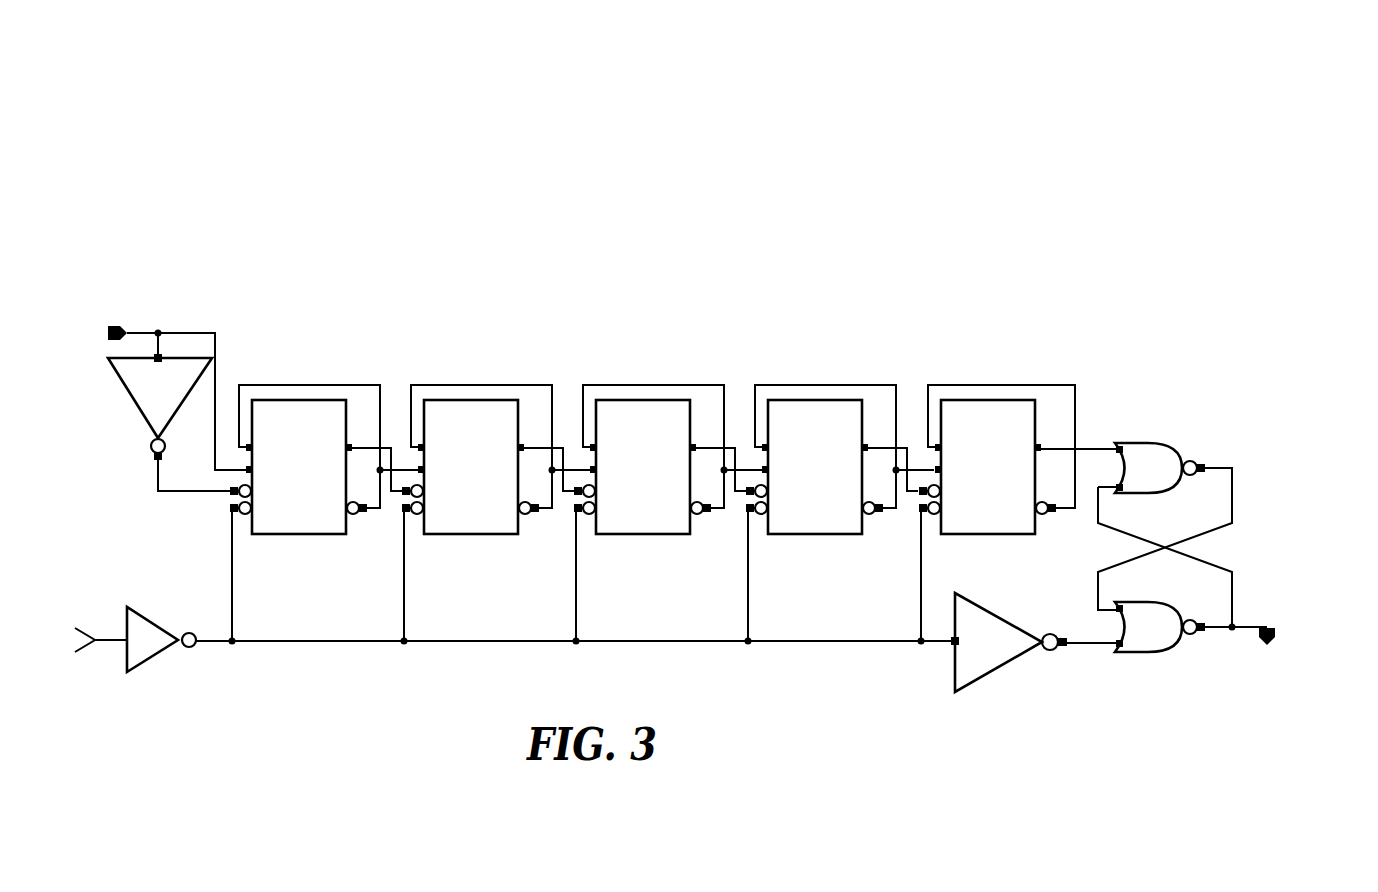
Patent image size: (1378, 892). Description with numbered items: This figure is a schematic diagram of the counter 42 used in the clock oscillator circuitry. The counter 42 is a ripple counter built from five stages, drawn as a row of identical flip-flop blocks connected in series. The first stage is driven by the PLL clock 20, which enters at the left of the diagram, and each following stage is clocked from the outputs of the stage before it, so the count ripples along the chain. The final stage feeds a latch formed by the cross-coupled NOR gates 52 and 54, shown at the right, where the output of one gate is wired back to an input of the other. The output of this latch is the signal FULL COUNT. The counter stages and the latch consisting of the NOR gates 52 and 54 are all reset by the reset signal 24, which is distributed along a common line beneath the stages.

The PLL clock 20 is at (140, 333).
The reset signal 24 is at (103, 646).
The counter 42 is at (543, 302).
The NOR gate 52 is at (1132, 443).
The NOR gate 54 is at (1178, 650).